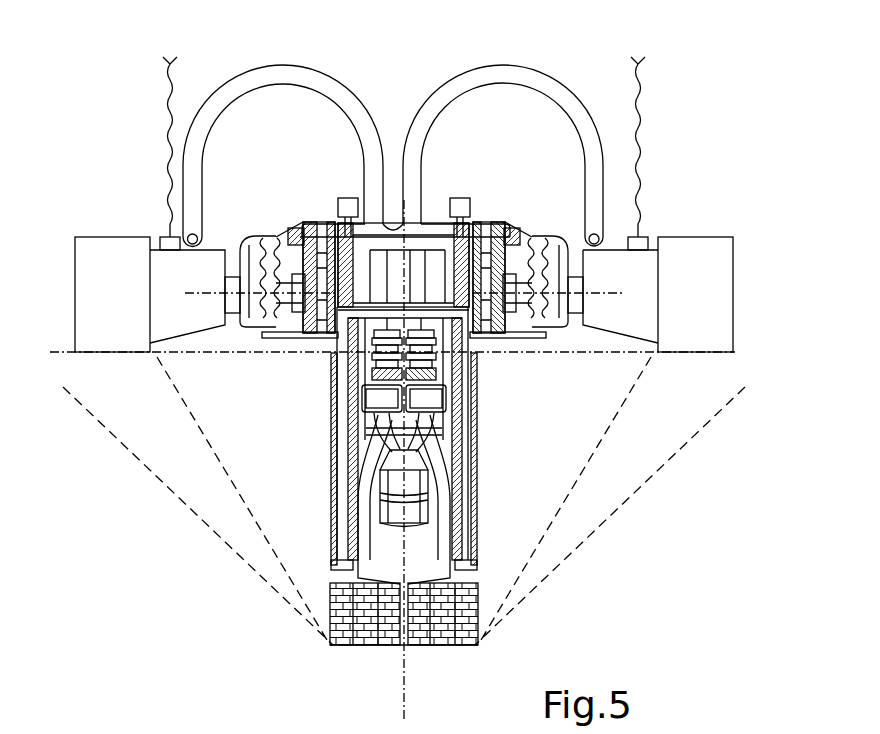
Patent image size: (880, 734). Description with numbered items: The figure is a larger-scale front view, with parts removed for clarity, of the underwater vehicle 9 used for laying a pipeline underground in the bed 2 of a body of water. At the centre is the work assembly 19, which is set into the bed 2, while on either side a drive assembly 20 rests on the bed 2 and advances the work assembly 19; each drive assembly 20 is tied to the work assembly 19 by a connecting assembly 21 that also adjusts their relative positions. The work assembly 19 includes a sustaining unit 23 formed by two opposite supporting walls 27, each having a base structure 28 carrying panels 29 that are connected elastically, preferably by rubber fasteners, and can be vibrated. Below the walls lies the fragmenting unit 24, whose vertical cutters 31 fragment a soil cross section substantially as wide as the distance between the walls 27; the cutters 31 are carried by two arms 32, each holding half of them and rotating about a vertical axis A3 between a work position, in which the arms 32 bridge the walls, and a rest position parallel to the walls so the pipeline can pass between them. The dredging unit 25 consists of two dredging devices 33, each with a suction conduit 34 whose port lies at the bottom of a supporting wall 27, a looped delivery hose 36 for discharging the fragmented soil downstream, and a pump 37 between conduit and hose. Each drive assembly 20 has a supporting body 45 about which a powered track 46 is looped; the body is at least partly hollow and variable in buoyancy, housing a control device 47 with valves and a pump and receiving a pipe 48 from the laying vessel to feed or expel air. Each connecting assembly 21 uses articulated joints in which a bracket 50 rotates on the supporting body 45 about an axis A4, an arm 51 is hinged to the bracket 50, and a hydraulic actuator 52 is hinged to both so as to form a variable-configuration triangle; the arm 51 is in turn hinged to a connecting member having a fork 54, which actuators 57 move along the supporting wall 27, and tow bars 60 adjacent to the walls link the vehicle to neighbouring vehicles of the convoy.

The bed 2 is at (737, 360).
The underwater vehicle 9 is at (748, 192).
The work assembly 19 is at (314, 651).
The drive assembly 20 is at (405, 288).
The connecting assembly 21 is at (285, 344).
The sustaining unit 23 is at (494, 558).
The fragmenting unit 24 is at (465, 659).
The dredging unit 25 is at (594, 103).
The supporting wall 27 is at (283, 513).
The base structure 28 is at (348, 452).
The panel 29 is at (334, 425).
The vertical cutter 31 is at (342, 648).
The arm 32 is at (337, 578).
The dredging device 33 is at (393, 133).
The suction conduit 34 is at (350, 470).
The delivery hose 36 is at (338, 90).
The pump 37 is at (384, 398).
The supporting body 45 is at (193, 335).
The powered track 46 is at (92, 270).
The control device 47 is at (165, 237).
The pipe 48 is at (166, 150).
The bracket 50 is at (253, 250).
The arm 51 is at (290, 252).
The actuator 52 is at (289, 342).
The fork 54 is at (310, 227).
The actuator 57 is at (355, 190).
The tow bar 60 is at (308, 233).
The vertical axis A3 is at (329, 561).
The axis A4 is at (225, 343).